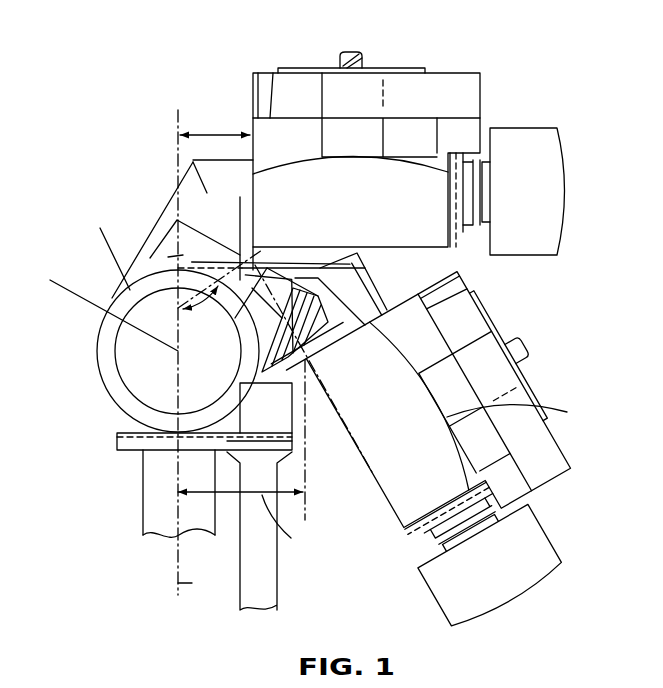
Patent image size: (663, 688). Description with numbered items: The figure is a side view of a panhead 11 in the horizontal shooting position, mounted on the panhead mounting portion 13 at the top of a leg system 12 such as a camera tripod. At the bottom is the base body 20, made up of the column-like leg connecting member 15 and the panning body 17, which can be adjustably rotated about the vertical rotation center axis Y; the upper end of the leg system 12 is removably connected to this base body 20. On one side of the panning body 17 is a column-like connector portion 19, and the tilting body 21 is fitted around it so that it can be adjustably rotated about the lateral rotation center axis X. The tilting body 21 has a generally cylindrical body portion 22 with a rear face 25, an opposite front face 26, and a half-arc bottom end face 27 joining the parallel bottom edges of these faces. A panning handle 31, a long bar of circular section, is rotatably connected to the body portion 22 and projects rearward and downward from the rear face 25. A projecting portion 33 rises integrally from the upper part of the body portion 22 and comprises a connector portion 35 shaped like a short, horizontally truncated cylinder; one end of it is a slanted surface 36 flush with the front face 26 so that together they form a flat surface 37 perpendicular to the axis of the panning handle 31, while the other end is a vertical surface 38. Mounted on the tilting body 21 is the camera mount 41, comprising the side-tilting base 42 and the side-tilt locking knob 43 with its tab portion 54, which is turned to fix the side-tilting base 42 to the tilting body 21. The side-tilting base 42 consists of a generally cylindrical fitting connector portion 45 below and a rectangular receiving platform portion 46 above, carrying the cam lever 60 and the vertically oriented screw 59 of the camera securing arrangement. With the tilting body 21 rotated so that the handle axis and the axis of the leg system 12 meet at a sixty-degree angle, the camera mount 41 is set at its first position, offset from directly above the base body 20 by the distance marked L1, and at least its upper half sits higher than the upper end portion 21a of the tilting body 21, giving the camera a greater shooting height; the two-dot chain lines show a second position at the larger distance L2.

The panhead 11 is at (118, 117).
The leg system 12 is at (142, 534).
The panhead mounting portion 13 is at (148, 503).
The leg connecting member 15 is at (130, 442).
The panning body 17 is at (130, 355).
The connector portion 19 is at (130, 343).
The base body 20 is at (117, 450).
The tilting body 21 is at (97, 378).
The upper end portion 21a is at (228, 158).
The body portion 22 is at (96, 149).
The rear face 25 is at (248, 402).
The front face 26 is at (112, 300).
The bottom end face 27 is at (108, 406).
The panning handle 31 is at (366, 470).
The projecting portion 33 is at (182, 158).
The connector portion 35 is at (207, 193).
The slanted surface 36 is at (172, 205).
The flat surface 37 is at (143, 237).
The vertical surface 38 is at (255, 260).
The camera mount 41 is at (488, 110).
The side-tilting base 42 is at (308, 76).
The side-tilt locking knob 43 is at (553, 162).
The fitting connector portion 45 is at (409, 237).
The receiving platform portion 46 is at (289, 88).
The tab portion 54 is at (555, 231).
The screw 59 is at (353, 55).
The cam lever 60 is at (451, 72).